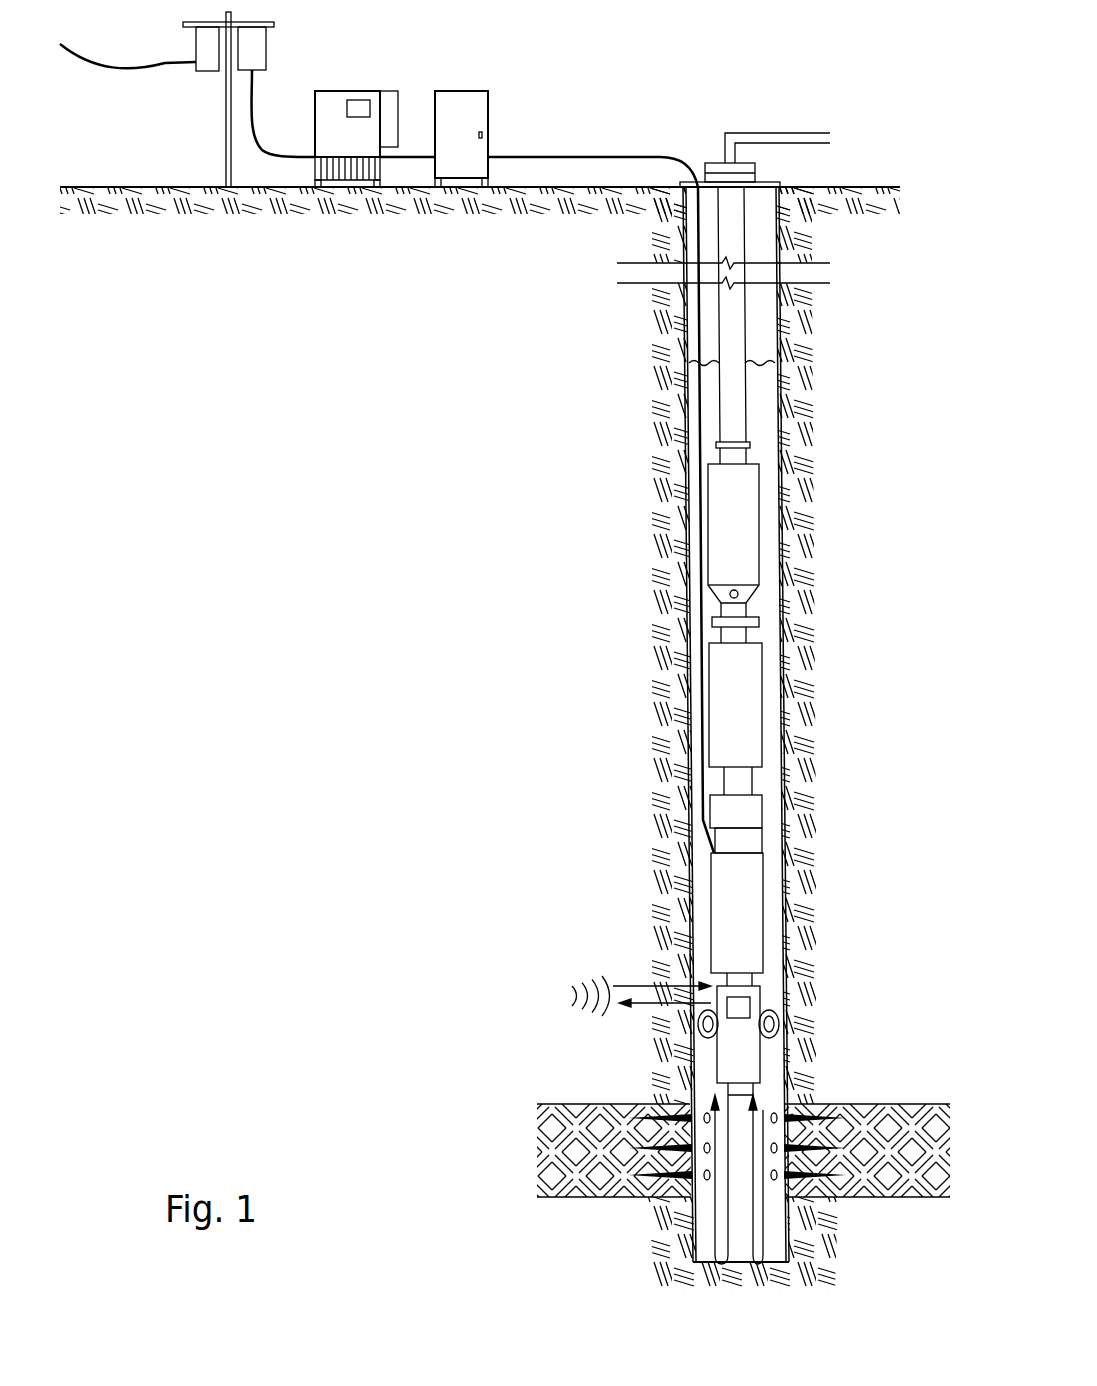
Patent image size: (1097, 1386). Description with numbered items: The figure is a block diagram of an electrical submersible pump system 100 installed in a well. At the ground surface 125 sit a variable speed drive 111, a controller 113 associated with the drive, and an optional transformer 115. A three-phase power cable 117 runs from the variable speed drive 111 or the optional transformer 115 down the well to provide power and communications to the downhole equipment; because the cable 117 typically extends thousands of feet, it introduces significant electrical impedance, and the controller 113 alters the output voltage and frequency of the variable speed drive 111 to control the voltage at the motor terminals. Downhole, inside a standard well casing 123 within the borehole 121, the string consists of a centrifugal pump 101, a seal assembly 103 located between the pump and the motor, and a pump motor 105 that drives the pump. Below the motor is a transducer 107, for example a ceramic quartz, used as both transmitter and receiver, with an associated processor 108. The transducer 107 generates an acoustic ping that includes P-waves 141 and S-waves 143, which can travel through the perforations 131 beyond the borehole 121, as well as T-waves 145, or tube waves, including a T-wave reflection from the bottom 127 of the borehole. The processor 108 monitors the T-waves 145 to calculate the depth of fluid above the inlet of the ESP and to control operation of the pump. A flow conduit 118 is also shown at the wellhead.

The electrical submersible pump system 100 is at (766, 62).
The variable speed drive 111 is at (343, 91).
The controller 113 is at (390, 91).
The transformer 115 is at (480, 91).
The three-phase power cable 117 is at (548, 157).
The production flowline 118 is at (797, 133).
The surface 125 is at (852, 187).
The centrifugal pump 101 is at (737, 495).
The seal assembly 103 is at (728, 697).
The pump motor 105 is at (731, 863).
The transducer 107 is at (745, 1048).
The processor 108 is at (752, 1005).
The well casing 123 is at (700, 920).
The P-waves 141 is at (700, 1027).
The S-waves 143 is at (613, 986).
The borehole 121 is at (600, 1198).
The perforations 131 is at (740, 1160).
The T-waves 145 is at (715, 1232).
The bottom of the borehole 127 is at (738, 1262).